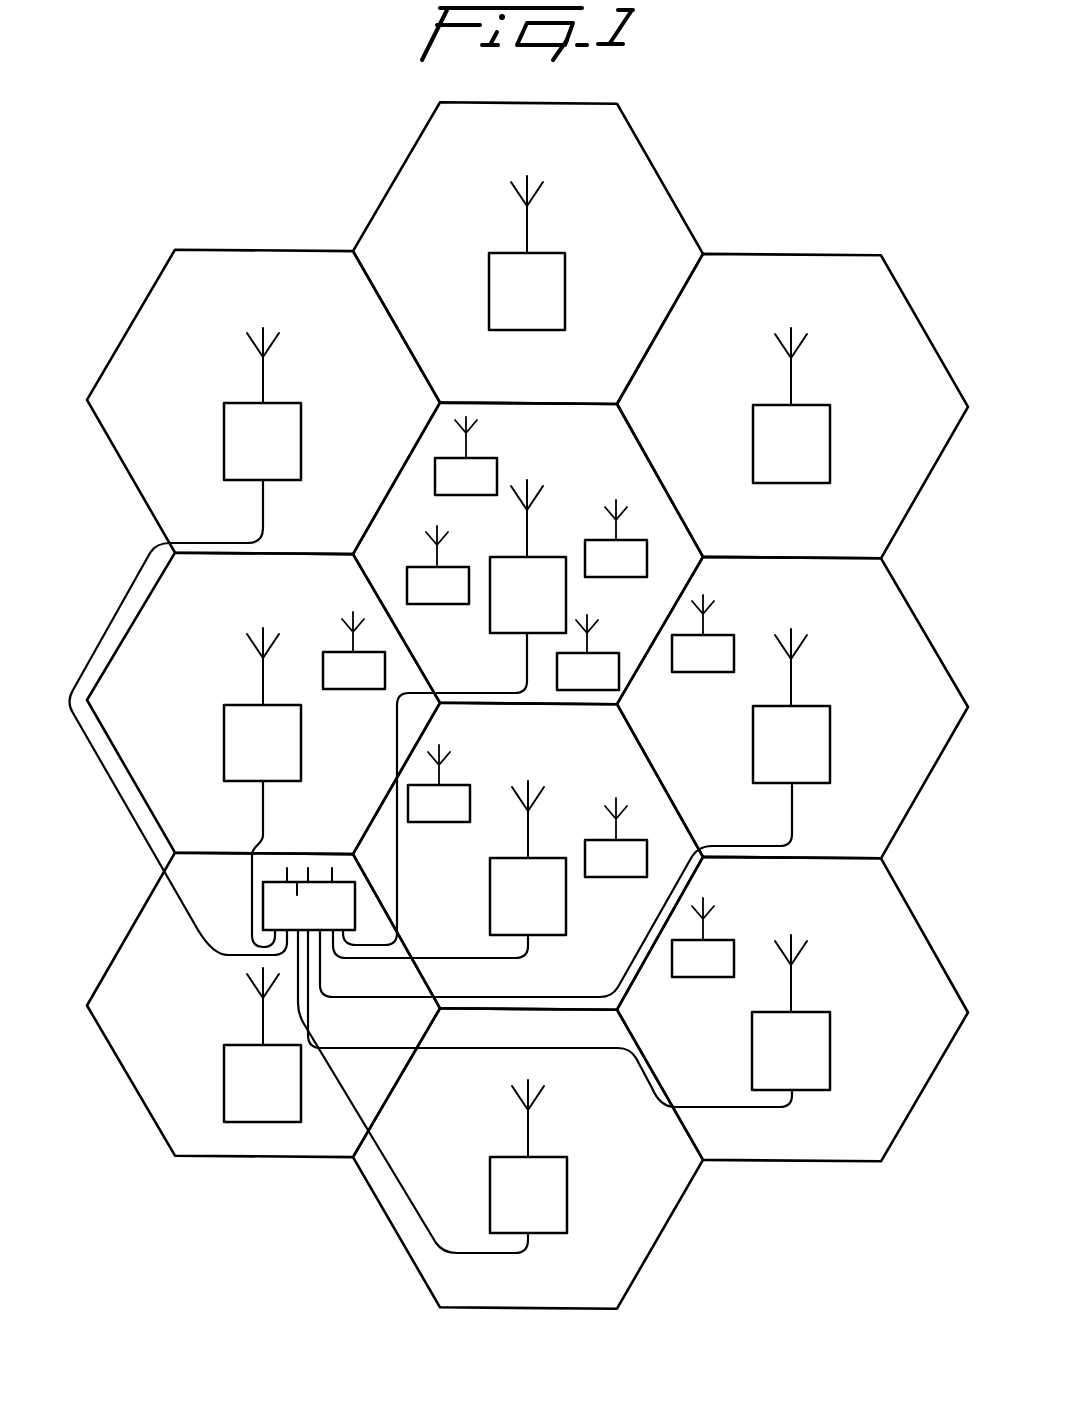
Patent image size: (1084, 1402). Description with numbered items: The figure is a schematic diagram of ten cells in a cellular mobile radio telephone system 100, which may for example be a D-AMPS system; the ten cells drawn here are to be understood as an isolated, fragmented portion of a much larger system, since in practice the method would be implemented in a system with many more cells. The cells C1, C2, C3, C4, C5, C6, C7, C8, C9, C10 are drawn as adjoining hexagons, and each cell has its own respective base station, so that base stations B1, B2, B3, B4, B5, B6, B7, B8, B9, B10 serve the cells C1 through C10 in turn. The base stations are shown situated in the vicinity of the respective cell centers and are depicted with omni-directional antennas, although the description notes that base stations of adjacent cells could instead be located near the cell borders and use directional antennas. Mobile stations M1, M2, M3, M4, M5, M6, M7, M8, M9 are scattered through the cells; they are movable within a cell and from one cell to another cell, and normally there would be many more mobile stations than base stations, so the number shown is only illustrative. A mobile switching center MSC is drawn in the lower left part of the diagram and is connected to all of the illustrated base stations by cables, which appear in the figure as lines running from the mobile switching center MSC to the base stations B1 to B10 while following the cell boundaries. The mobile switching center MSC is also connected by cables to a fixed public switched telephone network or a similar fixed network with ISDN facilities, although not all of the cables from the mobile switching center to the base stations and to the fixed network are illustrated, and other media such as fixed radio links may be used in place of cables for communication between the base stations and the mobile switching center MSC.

The cellular mobile radio telephone system 100 is at (713, 124).
The cell C1 is at (463, 685).
The cell C2 is at (727, 541).
The cell C3 is at (727, 840).
The cell C4 is at (467, 990).
The cell C5 is at (200, 837).
The cell C6 is at (200, 538).
The cell C7 is at (464, 386).
The cell C8 is at (727, 1142).
The cell C9 is at (467, 1290).
The cell C10 is at (209, 1142).
The base station B1 is at (528, 556).
The base station B2 is at (791, 405).
The base station B3 is at (791, 706).
The base station B4 is at (528, 858).
The base station B5 is at (262, 704).
The base station B6 is at (262, 404).
The base station B7 is at (527, 253).
The base station B8 is at (791, 1012).
The base station B9 is at (528, 1156).
The base station B10 is at (262, 1045).
The mobile station M1 is at (703, 937).
The mobile station M2 is at (354, 650).
The mobile station M3 is at (438, 565).
The mobile station M4 is at (616, 538).
The mobile station M5 is at (703, 633).
The mobile station M6 is at (466, 456).
The mobile station M7 is at (588, 652).
The mobile station M8 is at (616, 837).
The mobile station M9 is at (439, 783).
The mobile switching center MSC is at (309, 899).